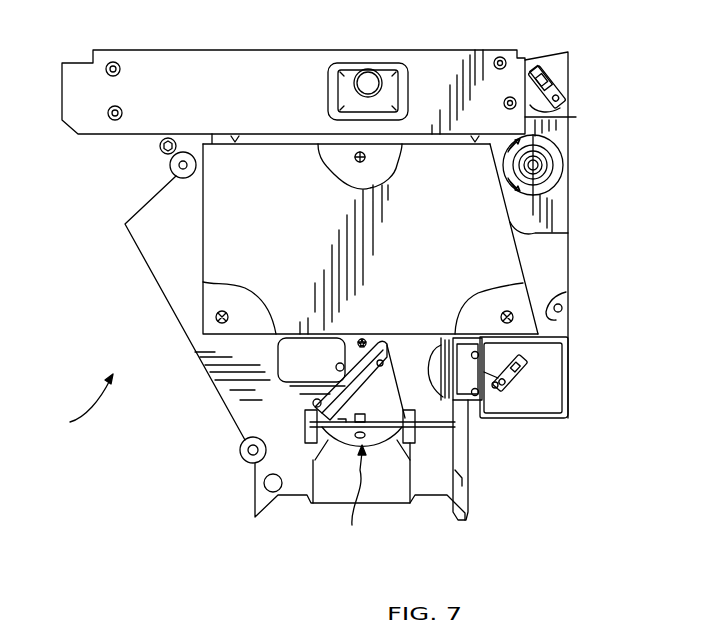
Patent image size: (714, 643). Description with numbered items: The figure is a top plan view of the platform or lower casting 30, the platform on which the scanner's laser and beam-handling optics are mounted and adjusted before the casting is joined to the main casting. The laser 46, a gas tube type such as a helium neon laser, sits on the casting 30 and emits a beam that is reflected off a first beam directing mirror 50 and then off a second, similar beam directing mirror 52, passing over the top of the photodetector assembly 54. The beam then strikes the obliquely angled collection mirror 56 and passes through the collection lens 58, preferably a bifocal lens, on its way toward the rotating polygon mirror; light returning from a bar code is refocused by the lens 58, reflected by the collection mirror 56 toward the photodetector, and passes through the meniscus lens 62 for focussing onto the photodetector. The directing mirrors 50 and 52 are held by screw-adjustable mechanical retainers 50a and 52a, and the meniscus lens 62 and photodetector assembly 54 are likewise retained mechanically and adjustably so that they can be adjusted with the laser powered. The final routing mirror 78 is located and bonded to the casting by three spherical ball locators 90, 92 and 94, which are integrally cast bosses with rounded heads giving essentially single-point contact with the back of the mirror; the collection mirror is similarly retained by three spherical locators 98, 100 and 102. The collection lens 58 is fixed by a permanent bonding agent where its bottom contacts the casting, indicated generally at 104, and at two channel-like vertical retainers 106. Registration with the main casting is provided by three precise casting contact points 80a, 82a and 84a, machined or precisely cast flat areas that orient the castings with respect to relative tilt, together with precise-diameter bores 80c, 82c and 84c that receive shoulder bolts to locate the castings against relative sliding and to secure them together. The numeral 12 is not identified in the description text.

The laser 46 is at (297, 83).
The first beam directing mirror 50 is at (555, 112).
The screw-adjustable mechanical retainer 50a is at (547, 70).
The casting contact point 84a is at (177, 178).
The bore 84c is at (188, 165).
The spherical ball locator 90 is at (355, 160).
The final routing mirror 78 is at (421, 252).
The spherical ball locator 92 is at (224, 308).
The spherical ball locator 94 is at (507, 308).
The casting contact point 80a is at (570, 301).
The bore 80c is at (562, 316).
The meniscus lens 62 is at (427, 340).
The second beam directing mirror 52 is at (520, 360).
The screw-adjustable mechanical retainer 52a is at (525, 368).
The spherical locator 100 is at (340, 362).
The spherical locator 98 is at (362, 339).
The collection mirror 56 is at (312, 392).
The spherical locator 102 is at (313, 405).
The bore 82c is at (262, 439).
The casting contact point 82a is at (255, 463).
The bottom contact bonding location 104 is at (366, 416).
The collection lens 58 is at (382, 443).
The channel-like vertical retainer 106 is at (414, 440).
The photodetector assembly 54 is at (462, 402).
The machine 12 is at (356, 493).
The platform casting 30 is at (76, 406).